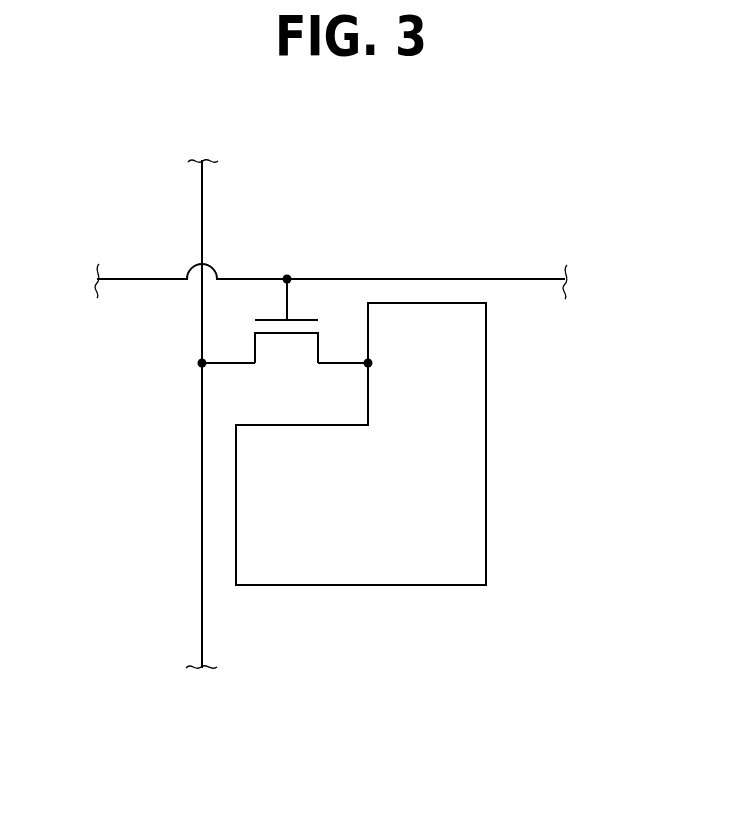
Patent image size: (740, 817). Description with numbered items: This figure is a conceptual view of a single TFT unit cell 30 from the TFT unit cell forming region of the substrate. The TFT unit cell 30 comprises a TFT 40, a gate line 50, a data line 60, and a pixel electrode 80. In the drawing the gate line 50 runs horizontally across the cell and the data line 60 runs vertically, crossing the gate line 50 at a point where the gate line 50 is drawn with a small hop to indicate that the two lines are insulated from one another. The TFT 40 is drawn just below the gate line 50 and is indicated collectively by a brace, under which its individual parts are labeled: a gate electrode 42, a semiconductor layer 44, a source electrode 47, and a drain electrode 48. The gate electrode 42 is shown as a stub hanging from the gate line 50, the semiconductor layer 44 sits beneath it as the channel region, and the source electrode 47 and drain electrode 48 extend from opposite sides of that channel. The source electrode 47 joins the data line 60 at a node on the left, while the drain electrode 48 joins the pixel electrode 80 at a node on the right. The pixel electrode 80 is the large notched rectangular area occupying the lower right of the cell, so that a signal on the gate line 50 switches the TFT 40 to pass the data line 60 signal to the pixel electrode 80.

The TFT unit cell 30 is at (530, 160).
The TFT 40 is at (258, 153).
The gate electrode 42 is at (270, 318).
The semiconductor layer 44 is at (310, 327).
The source electrode 47 is at (206, 360).
The drain electrode 48 is at (368, 360).
The gate line 50 is at (142, 282).
The data line 60 is at (202, 210).
The pixel electrode 80 is at (472, 455).